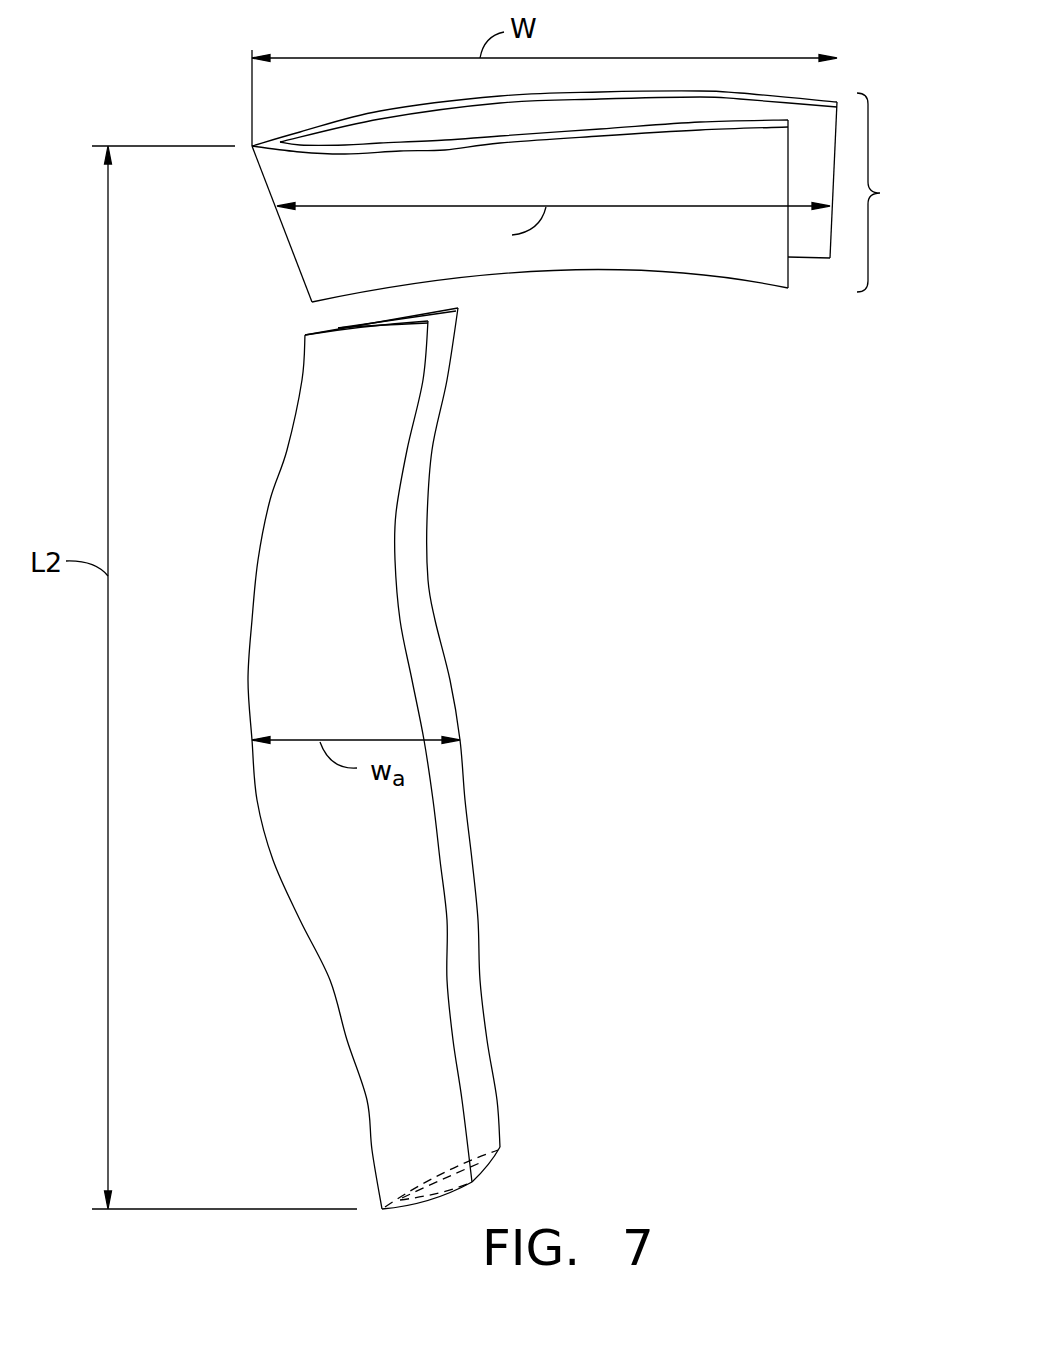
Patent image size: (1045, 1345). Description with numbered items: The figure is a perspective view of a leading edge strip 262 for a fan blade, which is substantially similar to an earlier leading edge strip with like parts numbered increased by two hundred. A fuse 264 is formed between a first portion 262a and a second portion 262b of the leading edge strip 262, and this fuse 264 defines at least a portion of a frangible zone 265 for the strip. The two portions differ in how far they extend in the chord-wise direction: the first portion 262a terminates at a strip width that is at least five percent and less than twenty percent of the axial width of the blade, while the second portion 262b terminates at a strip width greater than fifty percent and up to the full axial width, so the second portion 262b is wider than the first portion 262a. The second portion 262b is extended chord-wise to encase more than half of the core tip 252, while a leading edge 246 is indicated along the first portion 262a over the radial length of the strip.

The leading edge strip 262 is at (215, 88).
The core tip 252 is at (520, 101).
The second portion 262b is at (608, 181).
The frangible zone 265 is at (881, 194).
The fuse 264 is at (306, 317).
The airfoil 246 is at (255, 587).
The first portion 262a is at (364, 574).